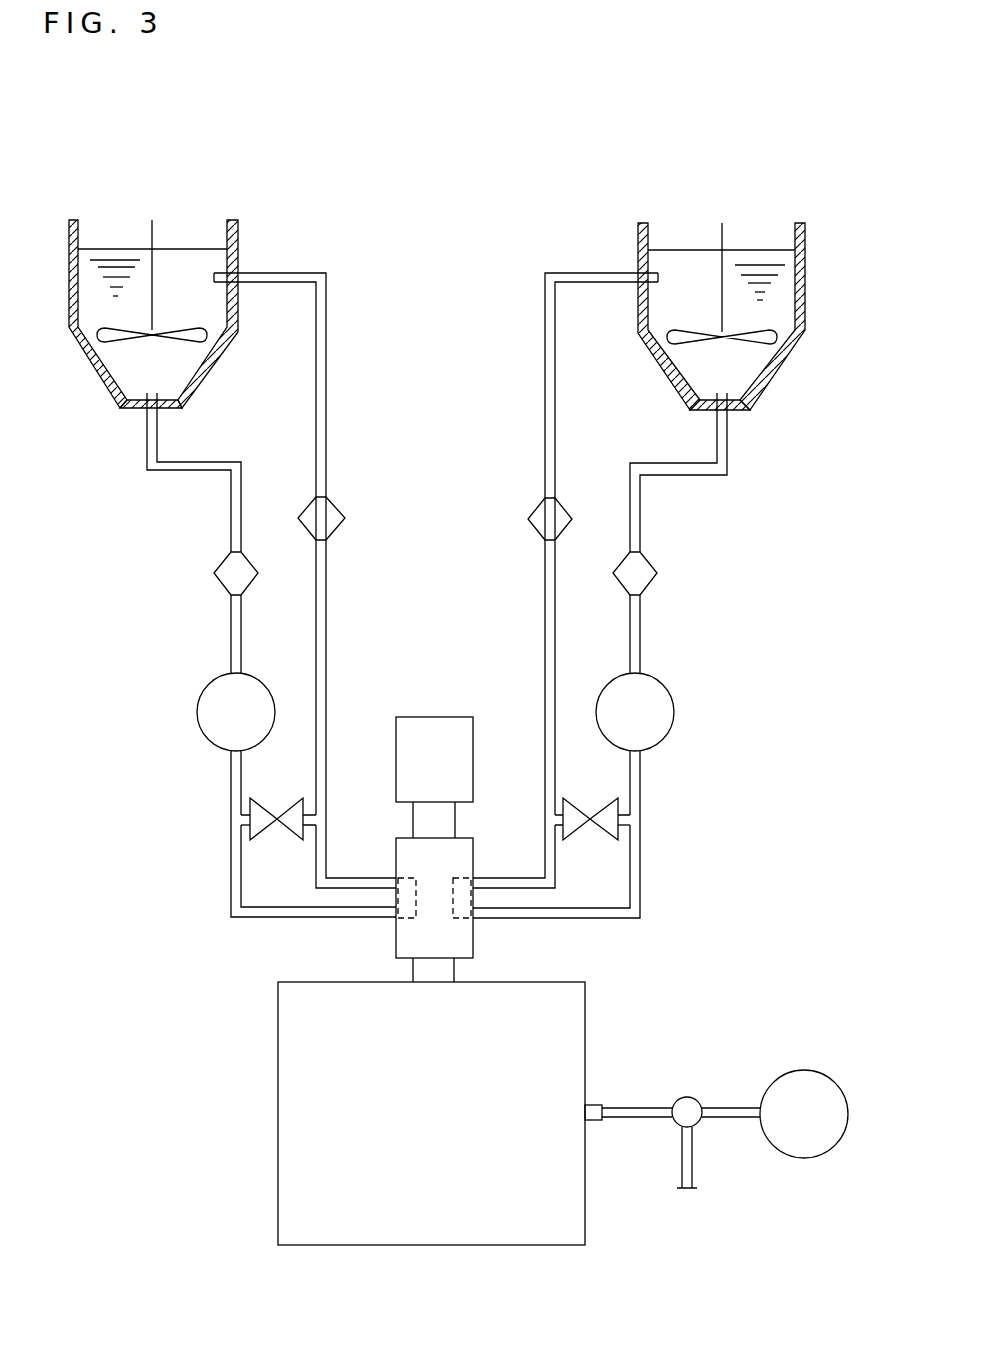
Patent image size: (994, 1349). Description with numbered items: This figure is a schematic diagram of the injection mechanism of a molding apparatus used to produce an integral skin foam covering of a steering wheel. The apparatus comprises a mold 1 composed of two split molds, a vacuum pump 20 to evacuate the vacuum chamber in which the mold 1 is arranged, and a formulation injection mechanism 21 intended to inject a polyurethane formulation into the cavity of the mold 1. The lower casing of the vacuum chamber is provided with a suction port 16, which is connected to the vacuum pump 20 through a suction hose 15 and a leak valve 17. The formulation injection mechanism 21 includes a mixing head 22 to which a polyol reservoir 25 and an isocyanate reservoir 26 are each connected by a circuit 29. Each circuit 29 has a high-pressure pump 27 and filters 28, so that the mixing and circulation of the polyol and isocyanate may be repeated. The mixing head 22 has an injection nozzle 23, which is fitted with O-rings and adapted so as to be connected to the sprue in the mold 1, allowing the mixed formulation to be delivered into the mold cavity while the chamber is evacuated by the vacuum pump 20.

The mold 1 is at (572, 1003).
The suction hose 15 is at (652, 1110).
The suction port 16 is at (597, 1107).
The leak valve 17 is at (692, 1110).
The vacuum pump 20 is at (805, 1082).
The formulation injection mechanism 21 is at (208, 940).
The mixing head 22 is at (460, 948).
The injection nozzle 23 is at (420, 968).
The polyol reservoir 25 is at (758, 235).
The isocyanate reservoir 26 is at (192, 233).
The high-pressure pump 27 is at (197, 715).
The filters 28 is at (230, 568).
The circuit 29 is at (322, 616).